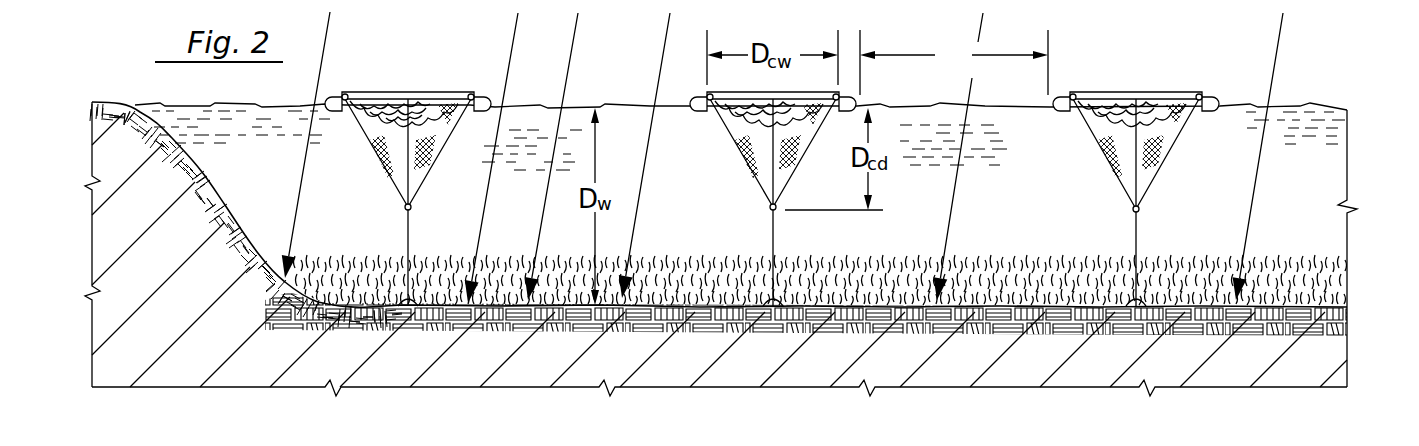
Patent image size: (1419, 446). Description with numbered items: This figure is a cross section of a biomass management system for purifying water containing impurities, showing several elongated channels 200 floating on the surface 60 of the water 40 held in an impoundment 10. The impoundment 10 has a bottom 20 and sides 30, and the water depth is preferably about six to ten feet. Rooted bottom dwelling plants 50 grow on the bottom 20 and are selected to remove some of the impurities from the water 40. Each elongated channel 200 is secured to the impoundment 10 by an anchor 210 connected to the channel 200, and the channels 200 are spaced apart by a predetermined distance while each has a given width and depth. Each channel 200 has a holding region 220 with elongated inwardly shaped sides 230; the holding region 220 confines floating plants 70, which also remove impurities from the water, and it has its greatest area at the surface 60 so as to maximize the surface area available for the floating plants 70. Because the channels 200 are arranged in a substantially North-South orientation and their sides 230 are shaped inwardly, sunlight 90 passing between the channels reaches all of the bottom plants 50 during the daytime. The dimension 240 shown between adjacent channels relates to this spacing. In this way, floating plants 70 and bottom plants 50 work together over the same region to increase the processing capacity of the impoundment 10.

The impoundment 10 is at (250, 307).
The bottom 20 is at (978, 326).
The sides 30 is at (228, 207).
The water 40 is at (1053, 213).
The rooted bottom dwelling plants 50 is at (1187, 268).
The surface 60 is at (892, 104).
The floating plants 70 is at (440, 108).
The sunlight 90 is at (323, 57).
The elongated channel 200 is at (388, 92).
The anchor 210 is at (403, 300).
The holding region 220 is at (744, 178).
The elongated inwardly shaped sides 230 is at (801, 182).
The spacing between containers 240 is at (1006, 54).